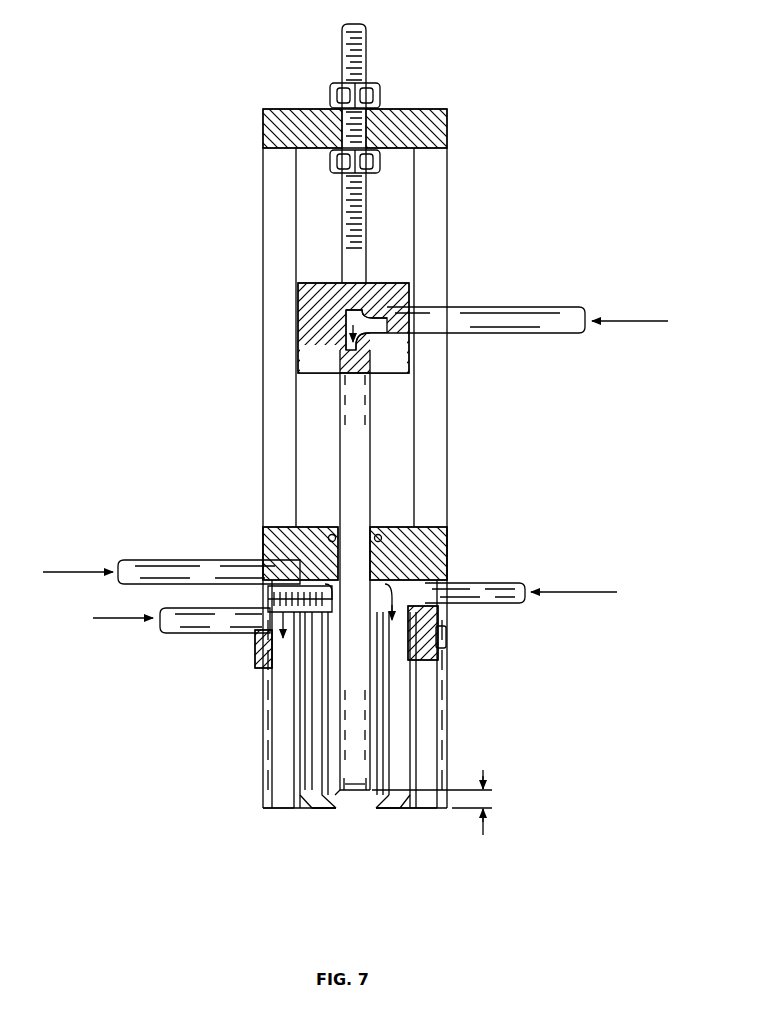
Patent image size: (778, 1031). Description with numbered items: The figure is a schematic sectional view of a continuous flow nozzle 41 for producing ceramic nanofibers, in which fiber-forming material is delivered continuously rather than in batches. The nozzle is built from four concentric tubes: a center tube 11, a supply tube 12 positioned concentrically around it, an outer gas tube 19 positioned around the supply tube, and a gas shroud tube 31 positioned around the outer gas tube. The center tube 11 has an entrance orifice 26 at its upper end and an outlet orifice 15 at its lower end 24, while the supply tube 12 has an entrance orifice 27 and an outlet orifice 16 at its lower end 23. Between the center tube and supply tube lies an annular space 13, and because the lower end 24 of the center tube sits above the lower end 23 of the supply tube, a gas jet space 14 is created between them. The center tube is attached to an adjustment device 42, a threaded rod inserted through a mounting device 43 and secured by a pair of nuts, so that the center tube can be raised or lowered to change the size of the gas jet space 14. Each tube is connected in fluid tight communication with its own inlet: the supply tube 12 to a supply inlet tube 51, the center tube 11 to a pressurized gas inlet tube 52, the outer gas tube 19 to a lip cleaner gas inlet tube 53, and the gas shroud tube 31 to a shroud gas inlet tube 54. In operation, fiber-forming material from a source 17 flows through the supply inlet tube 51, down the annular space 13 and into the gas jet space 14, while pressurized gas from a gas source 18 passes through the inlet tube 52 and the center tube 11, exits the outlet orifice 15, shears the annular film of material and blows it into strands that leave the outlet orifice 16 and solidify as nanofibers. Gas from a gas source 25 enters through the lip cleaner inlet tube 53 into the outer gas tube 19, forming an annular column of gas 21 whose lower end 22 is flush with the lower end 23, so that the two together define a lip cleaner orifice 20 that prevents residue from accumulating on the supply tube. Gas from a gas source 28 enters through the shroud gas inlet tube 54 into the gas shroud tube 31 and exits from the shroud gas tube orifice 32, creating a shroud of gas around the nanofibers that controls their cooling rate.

The center tube 11 is at (373, 492).
The supply tube 12 is at (390, 707).
The annular space 13 is at (377, 686).
The gas jet space 14 is at (485, 826).
The outlet orifice 15 is at (352, 792).
The outlet orifice 16 is at (366, 808).
The source 17 is at (60, 572).
The gas source 18 is at (651, 320).
The outer gas tube 19 is at (413, 730).
The lip cleaner orifice 20 is at (316, 809).
The annular column of gas 21 is at (310, 725).
The lower end 22 is at (401, 809).
The lower end 23 is at (381, 809).
The lower end 24 is at (343, 792).
The gas source 25 is at (598, 590).
The entrance orifice 26 is at (362, 357).
The entrance orifice 27 is at (387, 598).
The gas source 28 is at (107, 618).
The gas shroud tube 31 is at (440, 751).
The shroud gas tube orifice 32 is at (280, 809).
The continuous flow nozzle 41 is at (208, 478).
The adjustment device 42 is at (375, 69).
The mounting device 43 is at (448, 131).
The supply inlet tube 51 is at (160, 567).
The pressurized gas inlet tube 52 is at (513, 312).
The lip cleaner gas inlet tube 53 is at (494, 590).
The shroud gas inlet tube 54 is at (197, 630).